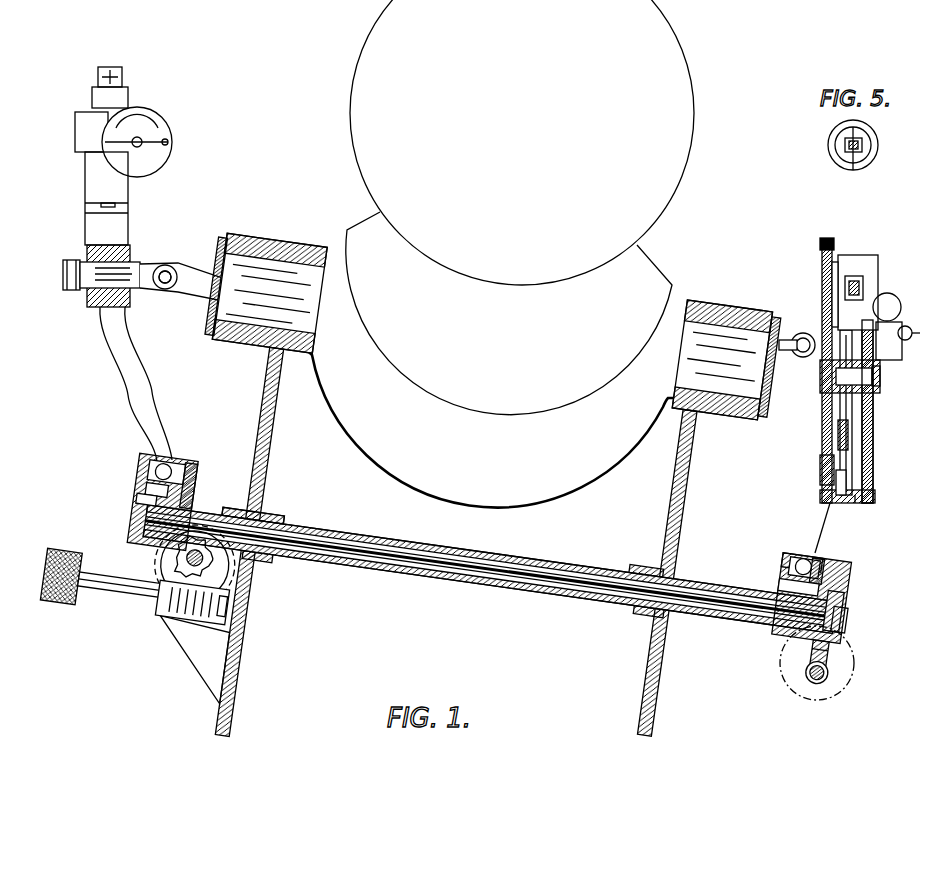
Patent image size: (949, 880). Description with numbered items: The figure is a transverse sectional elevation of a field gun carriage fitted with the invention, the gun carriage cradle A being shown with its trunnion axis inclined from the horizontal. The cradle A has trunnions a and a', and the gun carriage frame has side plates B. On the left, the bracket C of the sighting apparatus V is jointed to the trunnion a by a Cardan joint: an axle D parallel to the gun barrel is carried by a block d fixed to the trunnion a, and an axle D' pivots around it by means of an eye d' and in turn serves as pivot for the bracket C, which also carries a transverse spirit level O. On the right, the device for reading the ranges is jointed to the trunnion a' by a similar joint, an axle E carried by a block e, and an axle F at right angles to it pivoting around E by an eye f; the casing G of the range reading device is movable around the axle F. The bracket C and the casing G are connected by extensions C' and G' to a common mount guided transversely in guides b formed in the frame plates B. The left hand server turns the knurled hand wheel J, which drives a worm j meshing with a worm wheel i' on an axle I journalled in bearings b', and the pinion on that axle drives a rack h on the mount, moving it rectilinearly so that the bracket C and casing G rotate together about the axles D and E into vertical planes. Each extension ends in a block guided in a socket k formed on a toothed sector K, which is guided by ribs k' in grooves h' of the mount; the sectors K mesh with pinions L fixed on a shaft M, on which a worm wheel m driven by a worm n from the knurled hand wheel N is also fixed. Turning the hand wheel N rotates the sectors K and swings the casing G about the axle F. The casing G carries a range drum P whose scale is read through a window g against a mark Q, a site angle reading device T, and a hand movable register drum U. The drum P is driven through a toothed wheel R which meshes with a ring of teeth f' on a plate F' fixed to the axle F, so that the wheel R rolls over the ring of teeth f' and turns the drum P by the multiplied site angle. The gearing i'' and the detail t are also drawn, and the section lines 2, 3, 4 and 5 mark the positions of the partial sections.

In FIG. 1, the gun carriage cradle A is at (395, 452).
In FIG. 1, the sighting apparatus V is at (77, 140).
In FIG. 1, the transverse spirit level O is at (90, 212).
In FIG. 1, the bracket of the sighting apparatus C is at (123, 264).
In FIG. 1, the axle D' is at (99, 297).
In FIG. 1, the axle D is at (173, 264).
In FIG. 1, the block d is at (184, 298).
In FIG. 1, the eye d' is at (161, 302).
In FIG. 1, the extension of the bracket C' is at (140, 388).
In FIG. 1, the trunnion a is at (265, 279).
In FIG. 1, the trunnion a' is at (726, 348).
In FIG. 1, the side plates of the gun carriage frame B is at (268, 476).
In FIG. 1, the guides b is at (442, 557).
In FIG. 1, the shaft M is at (565, 595).
In FIG. 1, the bracket bar line 3 is at (698, 583).
In FIG. 1, the rack h is at (260, 554).
In FIG. 1, the pinion L is at (150, 548).
In FIG. 1, the cylindrical socket k is at (472, 523).
In FIG. 5, the cylindrical socket k is at (847, 153).
In FIG. 1, the concentric ribs k' is at (500, 557).
In FIG. 1, the grooves h' is at (498, 565).
In FIG. 1, the plate 4 is at (202, 488).
In FIG. 1, the axle I is at (180, 566).
In FIG. 1, the worm wheel i' is at (206, 565).
In FIG. 1, the gear rim i'' is at (211, 576).
In FIG. 1, the knurled hand wheel J is at (72, 612).
In FIG. 1, the bearings b' is at (119, 597).
In FIG. 1, the worm j is at (175, 635).
In FIG. 1, the toothed sector K is at (796, 588).
In FIG. 1, the ball 5 is at (795, 556).
In FIG. 1, the cylindrical axle g' is at (846, 567).
In FIG. 1, the worm n is at (830, 676).
In FIG. 1, the worm wheel m is at (842, 650).
In FIG. 1, the knurled hand wheel N is at (821, 675).
In FIG. 1, the center line 2 is at (822, 508).
In FIG. 1, the range drum P is at (838, 352).
In FIG. 1, the register drum U is at (836, 258).
In FIG. 1, the window g is at (868, 291).
In FIG. 1, the mark Q is at (838, 300).
In FIG. 1, the device for reading the site angles T is at (900, 324).
In FIG. 1, the roller pin t is at (915, 334).
In FIG. 1, the axle F is at (860, 384).
In FIG. 1, the eye f is at (838, 397).
In FIG. 1, the axle E is at (800, 338).
In FIG. 1, the block e is at (790, 355).
In FIG. 1, the toothed wheel R is at (838, 428).
In FIG. 1, the plate F' is at (806, 479).
In FIG. 1, the extension of the casing G' is at (802, 528).
In FIG. 5, the extension of the casing G' is at (859, 162).
In FIG. 1, the casing G is at (880, 411).
In FIG. 1, the ring of teeth f' is at (862, 511).